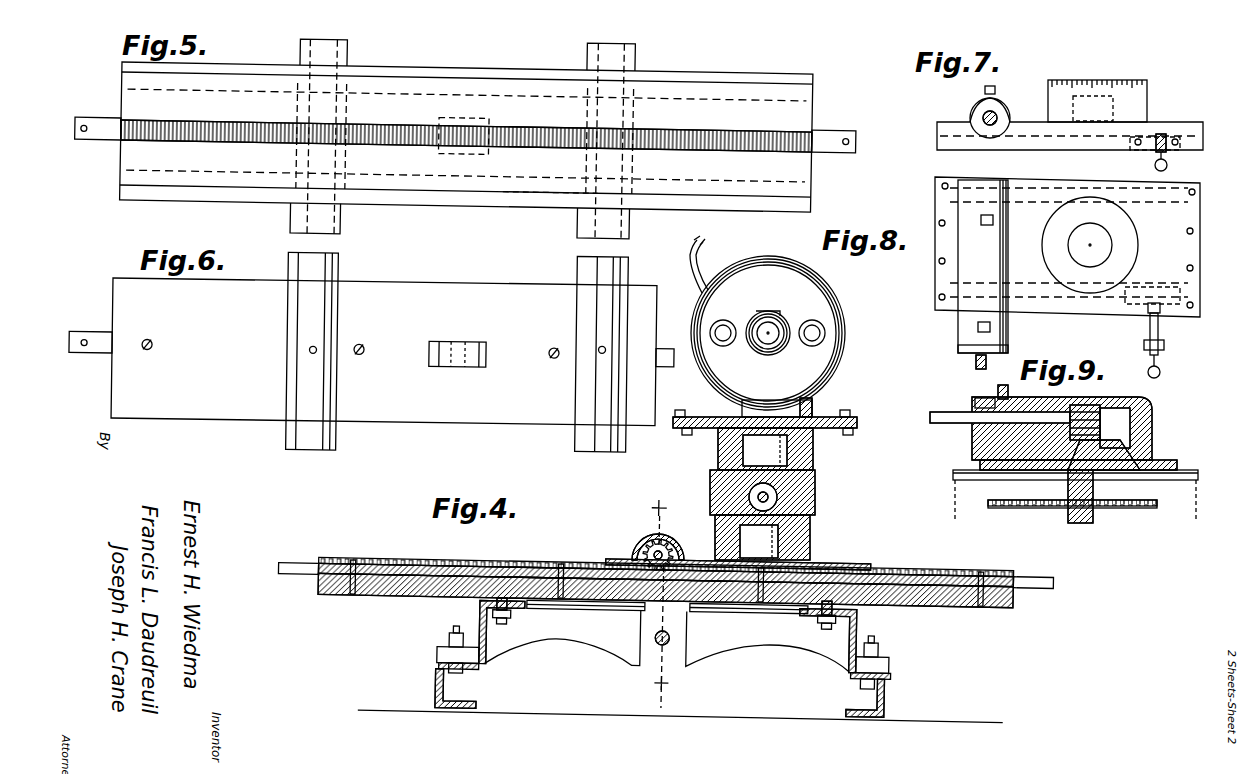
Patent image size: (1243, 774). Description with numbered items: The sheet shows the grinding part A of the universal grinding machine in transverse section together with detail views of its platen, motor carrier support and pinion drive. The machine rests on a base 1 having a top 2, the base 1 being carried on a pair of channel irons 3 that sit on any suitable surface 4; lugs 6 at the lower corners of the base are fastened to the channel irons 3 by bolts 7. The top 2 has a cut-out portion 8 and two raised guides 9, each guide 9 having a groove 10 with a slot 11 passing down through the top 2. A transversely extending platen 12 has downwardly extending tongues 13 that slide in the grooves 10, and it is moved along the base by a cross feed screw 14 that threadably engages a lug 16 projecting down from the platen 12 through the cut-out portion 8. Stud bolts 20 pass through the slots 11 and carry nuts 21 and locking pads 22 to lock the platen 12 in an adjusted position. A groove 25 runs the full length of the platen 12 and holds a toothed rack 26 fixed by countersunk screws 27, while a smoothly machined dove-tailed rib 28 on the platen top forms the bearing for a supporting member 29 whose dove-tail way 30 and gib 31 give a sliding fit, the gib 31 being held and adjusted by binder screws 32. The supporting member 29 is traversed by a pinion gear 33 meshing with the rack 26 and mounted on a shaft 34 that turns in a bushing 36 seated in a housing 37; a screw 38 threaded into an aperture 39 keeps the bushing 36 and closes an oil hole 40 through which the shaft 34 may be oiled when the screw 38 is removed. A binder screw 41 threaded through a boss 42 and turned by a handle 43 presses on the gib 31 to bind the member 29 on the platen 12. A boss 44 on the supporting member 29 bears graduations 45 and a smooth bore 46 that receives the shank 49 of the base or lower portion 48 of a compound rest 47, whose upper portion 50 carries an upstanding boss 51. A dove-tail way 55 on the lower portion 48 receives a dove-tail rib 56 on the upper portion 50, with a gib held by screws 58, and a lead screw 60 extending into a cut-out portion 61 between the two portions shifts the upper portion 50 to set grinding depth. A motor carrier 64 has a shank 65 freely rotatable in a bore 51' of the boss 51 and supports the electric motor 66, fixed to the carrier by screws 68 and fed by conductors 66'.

In FIG. 4, the base 1 is at (860, 628).
In FIG. 9, the base 1 is at (964, 497).
In FIG. 4, the top 2 is at (570, 643).
In FIG. 4, the channel irons 3 is at (437, 690).
In FIG. 4, the surface 4 is at (588, 716).
In FIG. 4, the lugs 6 is at (438, 660).
In FIG. 4, the bolts 7 is at (450, 643).
In FIG. 4, the cut-out portion 8 is at (722, 611).
In FIG. 9, the cut-out portion 8 is at (965, 475).
In FIG. 4, the guides 9 is at (480, 610).
In FIG. 4, the groove 10 is at (585, 656).
In FIG. 4, the slot 11 is at (480, 618).
In FIG. 5, the platen 12 is at (695, 80).
In FIG. 6, the platen 12 is at (540, 284).
In FIG. 4, the platen 12 is at (1000, 601).
In FIG. 9, the platen 12 is at (1160, 462).
In FIG. 5, the tongues 13 is at (340, 212).
In FIG. 6, the tongues 13 is at (320, 389).
In FIG. 4, the tongues 13 is at (870, 578).
In FIG. 4, the cross feed screw 14 is at (656, 640).
In FIG. 9, the cross feed screw 14 is at (1012, 510).
In FIG. 5, the lug 16 is at (490, 113).
In FIG. 6, the lug 16 is at (460, 362).
In FIG. 4, the lug 16 is at (620, 611).
In FIG. 9, the lug 16 is at (1068, 520).
In FIG. 4, the stud bolts 20 is at (504, 590).
In FIG. 4, the nuts 21 is at (505, 628).
In FIG. 4, the locking pads 22 is at (795, 646).
In FIG. 5, the groove 25 is at (134, 113).
In FIG. 6, the groove 25 is at (92, 338).
In FIG. 4, the groove 25 is at (380, 583).
In FIG. 9, the groove 25 is at (1125, 508).
In FIG. 5, the toothed rack 26 is at (98, 140).
In FIG. 6, the toothed rack 26 is at (662, 341).
In FIG. 4, the toothed rack 26 is at (312, 582).
In FIG. 9, the toothed rack 26 is at (1150, 410).
In FIG. 6, the countersunk screws 27 is at (347, 354).
In FIG. 4, the countersunk screws 27 is at (352, 602).
In FIG. 5, the dove-tailed rib 28 is at (505, 186).
In FIG. 9, the dove-tailed rib 28 is at (1152, 440).
In FIG. 4, the supporting member 29 is at (862, 560).
In FIG. 7, the supporting member 29 is at (1150, 128).
In FIG. 8, the supporting member 29 is at (1185, 262).
In FIG. 9, the supporting member 29 is at (1048, 510).
In FIG. 9, the dove-tail guide or way 30 is at (1120, 470).
In FIG. 7, the gib 31 is at (1130, 148).
In FIG. 8, the gib 31 is at (1125, 300).
In FIG. 7, the binder screws 32 is at (1180, 142).
In FIG. 8, the binder screws 32 is at (1145, 318).
In FIG. 4, the pinion gear 33 is at (648, 548).
In FIG. 9, the pinion gear 33 is at (1105, 410).
In FIG. 4, the shaft 34 is at (670, 538).
In FIG. 7, the shaft 34 is at (985, 125).
In FIG. 9, the shaft 34 is at (960, 402).
In FIG. 7, the bushing 36 is at (970, 118).
In FIG. 8, the bushing 36 is at (958, 352).
In FIG. 9, the bushing 36 is at (980, 440).
In FIG. 4, the housing 37 is at (652, 536).
In FIG. 8, the housing 37 is at (958, 343).
In FIG. 7, the screw 38 is at (985, 95).
In FIG. 8, the screw 38 is at (978, 327).
In FIG. 8, the aperture 39 is at (958, 373).
In FIG. 9, the aperture 39 is at (996, 392).
In FIG. 9, the oil hole 40 is at (960, 422).
In FIG. 7, the binder screw 41 is at (1165, 135).
In FIG. 8, the binder screw 41 is at (1160, 340).
In FIG. 8, the boss 42 is at (1144, 345).
In FIG. 7, the handle 43 is at (1168, 166).
In FIG. 8, the handle 43 is at (1162, 368).
In FIG. 4, the boss 44 is at (800, 560).
In FIG. 7, the boss 44 is at (1140, 96).
In FIG. 8, the boss 44 is at (1122, 230).
In FIG. 7, the graduations 45 is at (1130, 84).
In FIG. 4, the bore 46 is at (810, 525).
In FIG. 8, the bore 46 is at (1112, 244).
In FIG. 4, the compound rest 47 is at (815, 500).
In FIG. 4, the base or lower portion 48 is at (759, 541).
In FIG. 4, the shank 49 is at (712, 540).
In FIG. 4, the upper portion 50 is at (815, 475).
In FIG. 4, the boss 51 is at (775, 451).
In FIG. 4, the bore 51' is at (799, 395).
In FIG. 4, the dove-tail guide or way 55 is at (815, 490).
In FIG. 4, the dove-tail rib 56 is at (718, 445).
In FIG. 4, the screws 58 is at (712, 480).
In FIG. 4, the lead screw 60 is at (800, 465).
In FIG. 4, the cut-out portion 61 is at (765, 452).
In FIG. 4, the motor carrier 64 is at (820, 417).
In FIG. 4, the shank 65 is at (777, 399).
In FIG. 4, the electric motor 66 is at (768, 333).
In FIG. 4, the conductors 66' is at (713, 264).
In FIG. 4, the screws 68 is at (680, 410).
In FIG. 4, the grinding part A is at (860, 525).